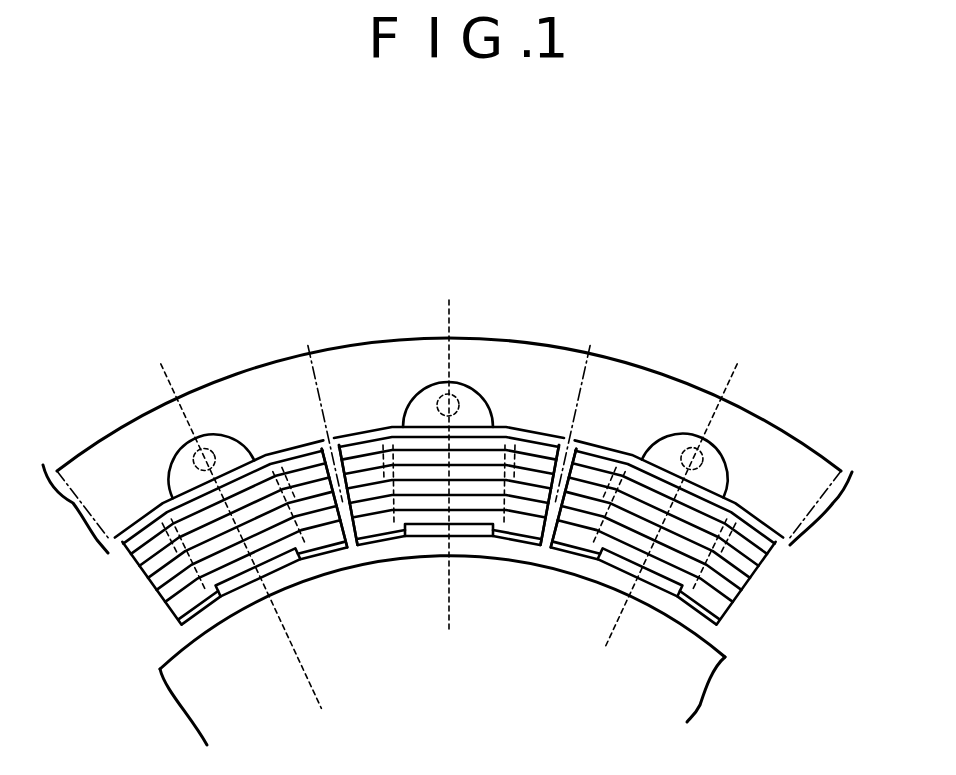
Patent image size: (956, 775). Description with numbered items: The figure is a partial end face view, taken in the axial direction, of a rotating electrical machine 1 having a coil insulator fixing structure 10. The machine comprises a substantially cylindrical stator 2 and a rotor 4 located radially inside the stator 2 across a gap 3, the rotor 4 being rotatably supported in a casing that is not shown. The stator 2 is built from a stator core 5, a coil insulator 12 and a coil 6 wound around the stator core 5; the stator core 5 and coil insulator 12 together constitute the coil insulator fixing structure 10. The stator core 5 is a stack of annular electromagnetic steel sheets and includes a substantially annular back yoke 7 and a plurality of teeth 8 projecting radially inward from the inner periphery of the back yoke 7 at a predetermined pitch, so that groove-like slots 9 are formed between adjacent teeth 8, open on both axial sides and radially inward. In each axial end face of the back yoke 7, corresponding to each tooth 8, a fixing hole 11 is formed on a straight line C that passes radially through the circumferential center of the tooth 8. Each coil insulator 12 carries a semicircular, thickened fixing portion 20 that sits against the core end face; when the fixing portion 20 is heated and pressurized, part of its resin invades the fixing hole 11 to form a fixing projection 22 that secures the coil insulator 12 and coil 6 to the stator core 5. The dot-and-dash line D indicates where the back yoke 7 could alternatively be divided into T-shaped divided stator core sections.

The rotating electrical machine 1 is at (652, 270).
The stator 2 is at (802, 431).
The gap 3 is at (703, 626).
The rotor 4 is at (687, 682).
The stator core 5 is at (314, 422).
The coil 6 is at (533, 465).
The back yoke 7 is at (242, 383).
The teeth 8 is at (607, 565).
The slots 9 is at (550, 505).
The coil insulator fixing structure 10 is at (355, 277).
The fixing hole 11 is at (463, 393).
The coil insulator 12 is at (362, 417).
The fixing portion 20 is at (425, 390).
The fixing projection 22 is at (691, 447).
The straight line C is at (608, 628).
The line D is at (585, 397).